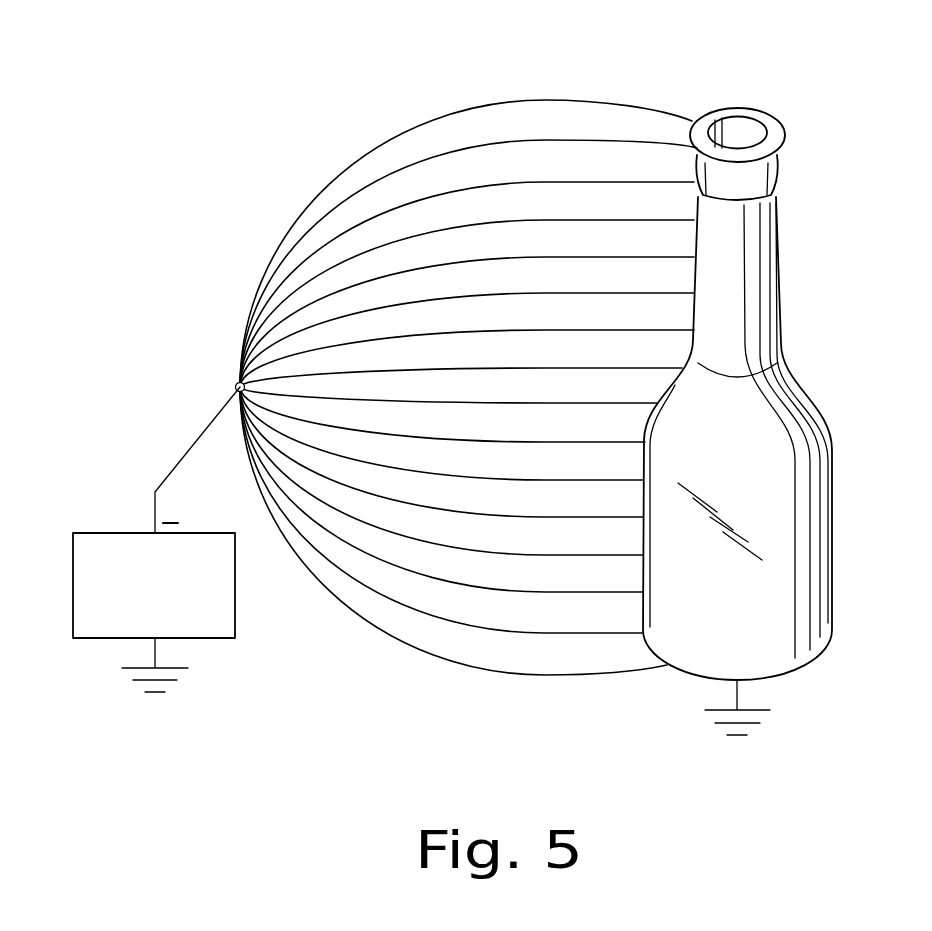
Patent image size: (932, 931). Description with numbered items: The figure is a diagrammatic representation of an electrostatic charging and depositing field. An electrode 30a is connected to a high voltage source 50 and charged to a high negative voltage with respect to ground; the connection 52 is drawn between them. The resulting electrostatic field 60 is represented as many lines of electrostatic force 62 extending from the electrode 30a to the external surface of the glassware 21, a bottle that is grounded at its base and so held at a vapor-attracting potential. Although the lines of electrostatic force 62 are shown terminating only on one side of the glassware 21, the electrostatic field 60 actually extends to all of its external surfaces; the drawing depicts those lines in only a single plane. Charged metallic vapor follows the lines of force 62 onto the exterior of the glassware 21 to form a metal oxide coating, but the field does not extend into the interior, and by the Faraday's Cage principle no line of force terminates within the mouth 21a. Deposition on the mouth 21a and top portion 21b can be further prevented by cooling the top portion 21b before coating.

The glassware 21 is at (773, 383).
The mouth 21a is at (729, 108).
The top portion 21b is at (774, 115).
The electrode 30a is at (236, 386).
The high voltage source 50 is at (88, 533).
The electrical lead 52 is at (177, 460).
The electrostatic field 60 is at (468, 426).
The lines of electrostatic force 62 is at (375, 151).